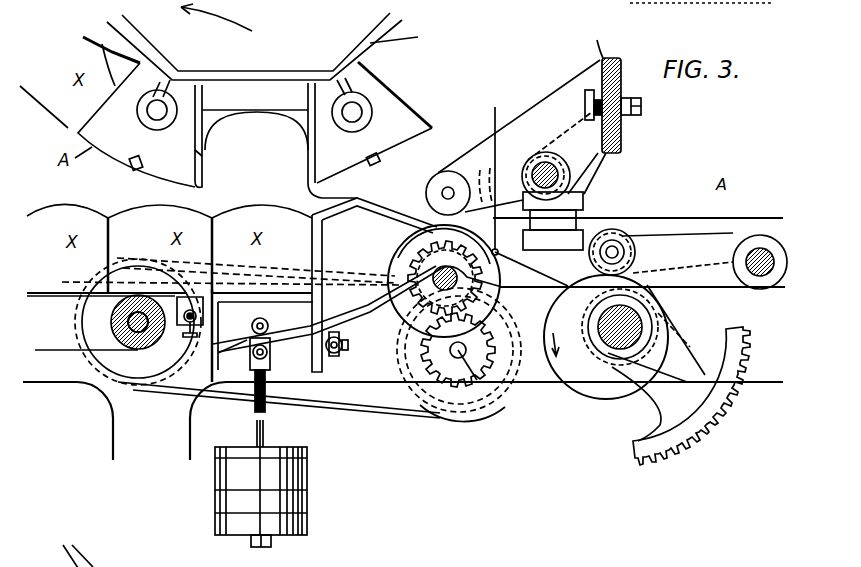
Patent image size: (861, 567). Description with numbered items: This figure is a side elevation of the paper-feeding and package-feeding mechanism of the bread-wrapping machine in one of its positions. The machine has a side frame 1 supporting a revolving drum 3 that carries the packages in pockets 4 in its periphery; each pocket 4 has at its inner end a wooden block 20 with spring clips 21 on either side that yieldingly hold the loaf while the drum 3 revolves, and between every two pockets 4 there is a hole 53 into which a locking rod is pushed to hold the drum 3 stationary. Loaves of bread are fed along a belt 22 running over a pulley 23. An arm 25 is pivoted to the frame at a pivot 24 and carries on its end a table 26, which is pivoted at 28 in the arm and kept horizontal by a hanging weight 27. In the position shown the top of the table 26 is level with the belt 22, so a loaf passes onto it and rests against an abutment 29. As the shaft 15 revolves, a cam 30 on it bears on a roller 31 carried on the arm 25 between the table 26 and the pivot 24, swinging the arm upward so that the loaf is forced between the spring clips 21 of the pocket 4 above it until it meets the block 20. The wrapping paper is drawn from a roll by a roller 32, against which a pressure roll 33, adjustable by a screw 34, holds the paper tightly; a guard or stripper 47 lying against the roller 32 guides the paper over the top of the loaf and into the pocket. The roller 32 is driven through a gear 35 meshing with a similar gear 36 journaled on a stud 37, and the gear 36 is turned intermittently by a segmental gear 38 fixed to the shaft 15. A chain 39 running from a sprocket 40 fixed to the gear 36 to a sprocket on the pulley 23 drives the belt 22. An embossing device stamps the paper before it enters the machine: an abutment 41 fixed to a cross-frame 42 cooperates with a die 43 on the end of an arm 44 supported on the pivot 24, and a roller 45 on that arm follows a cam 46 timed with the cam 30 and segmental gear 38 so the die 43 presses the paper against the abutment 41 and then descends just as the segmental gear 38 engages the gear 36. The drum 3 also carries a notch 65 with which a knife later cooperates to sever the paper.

The side frame 1 is at (82, 377).
The drum 3 is at (254, 42).
The pocket 4 is at (255, 130).
The shaft 15 is at (640, 323).
The block 20 is at (280, 73).
The spring clip 21 is at (445, 118).
The belt 22 is at (76, 349).
The pulley 23 is at (138, 377).
The pivot 24 is at (756, 255).
The arm 25 is at (642, 260).
The table 26 is at (195, 375).
The weight 27 is at (261, 483).
The pivot 28 is at (263, 345).
The abutment 29 is at (330, 244).
The cam 30 is at (610, 385).
The roller 31 is at (627, 238).
The roller 32 is at (410, 241).
The pressure roll 33 is at (428, 185).
The screw 34 is at (645, 107).
The gear 35 is at (392, 317).
The gear 36 is at (462, 395).
The stud 37 is at (473, 385).
The segmental gear 38 is at (700, 428).
The chain 39 is at (386, 405).
The sprocket 40 is at (500, 400).
The abutment 41 is at (585, 200).
The cross-frame 42 is at (622, 148).
The die 43 is at (553, 241).
The arm 44 is at (690, 218).
The roller 45 is at (568, 288).
The cam 46 is at (595, 358).
The guard 47 is at (330, 213).
The hole 53 is at (376, 122).
The notch 65 is at (381, 163).